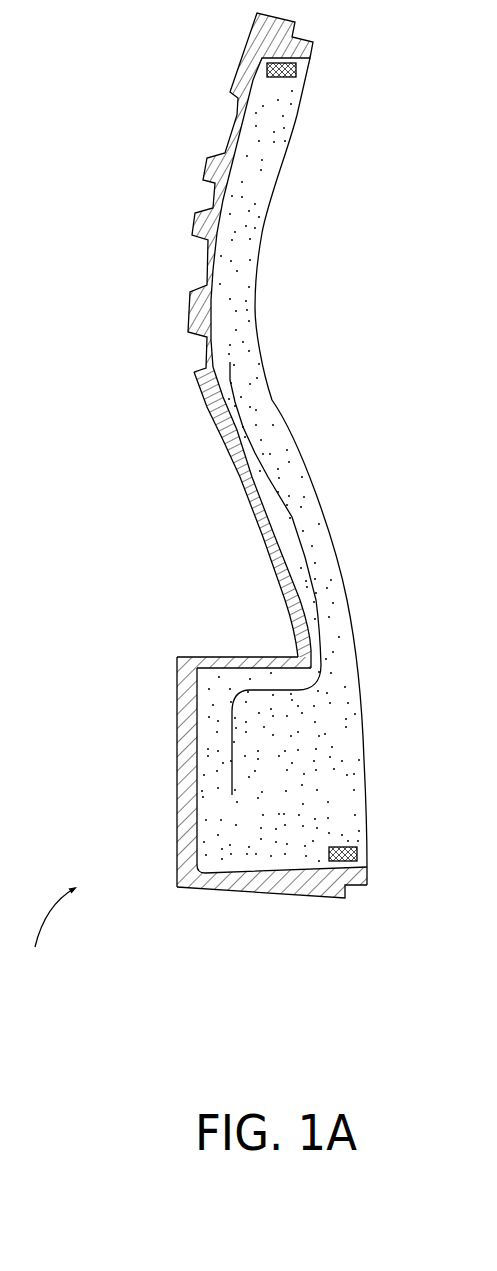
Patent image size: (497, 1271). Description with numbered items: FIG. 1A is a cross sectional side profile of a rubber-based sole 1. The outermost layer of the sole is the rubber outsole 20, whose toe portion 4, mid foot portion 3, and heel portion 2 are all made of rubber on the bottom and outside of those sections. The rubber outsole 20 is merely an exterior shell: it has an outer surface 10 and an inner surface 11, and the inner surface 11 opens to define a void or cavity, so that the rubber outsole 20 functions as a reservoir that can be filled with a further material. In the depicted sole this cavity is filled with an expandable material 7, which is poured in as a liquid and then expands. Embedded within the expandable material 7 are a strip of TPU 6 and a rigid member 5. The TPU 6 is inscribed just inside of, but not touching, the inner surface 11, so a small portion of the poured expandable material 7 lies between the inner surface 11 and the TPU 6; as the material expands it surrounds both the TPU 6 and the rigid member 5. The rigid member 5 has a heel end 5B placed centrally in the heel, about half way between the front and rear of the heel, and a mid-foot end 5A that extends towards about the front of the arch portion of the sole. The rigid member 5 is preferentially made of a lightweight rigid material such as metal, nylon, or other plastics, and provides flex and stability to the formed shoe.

The sole 1 is at (53, 934).
The heel portion 2 is at (214, 772).
The mid foot portion 3 is at (122, 292).
The toe portion 4 is at (123, 12).
The rigid member 5 is at (313, 587).
The mid-foot end 5A is at (230, 362).
The heel end 5B is at (232, 795).
The strip of TPU 6 is at (296, 70).
The expandable material 7 is at (307, 812).
The outer surface 10 is at (197, 657).
The inner surface 11 is at (233, 657).
The rubber outsole 20 is at (249, 904).